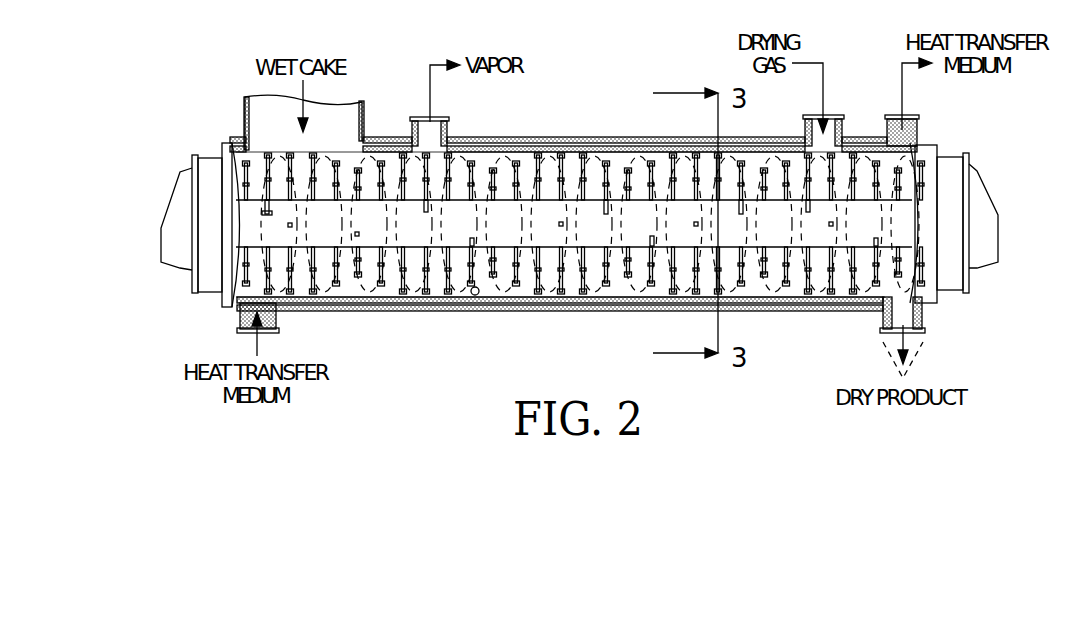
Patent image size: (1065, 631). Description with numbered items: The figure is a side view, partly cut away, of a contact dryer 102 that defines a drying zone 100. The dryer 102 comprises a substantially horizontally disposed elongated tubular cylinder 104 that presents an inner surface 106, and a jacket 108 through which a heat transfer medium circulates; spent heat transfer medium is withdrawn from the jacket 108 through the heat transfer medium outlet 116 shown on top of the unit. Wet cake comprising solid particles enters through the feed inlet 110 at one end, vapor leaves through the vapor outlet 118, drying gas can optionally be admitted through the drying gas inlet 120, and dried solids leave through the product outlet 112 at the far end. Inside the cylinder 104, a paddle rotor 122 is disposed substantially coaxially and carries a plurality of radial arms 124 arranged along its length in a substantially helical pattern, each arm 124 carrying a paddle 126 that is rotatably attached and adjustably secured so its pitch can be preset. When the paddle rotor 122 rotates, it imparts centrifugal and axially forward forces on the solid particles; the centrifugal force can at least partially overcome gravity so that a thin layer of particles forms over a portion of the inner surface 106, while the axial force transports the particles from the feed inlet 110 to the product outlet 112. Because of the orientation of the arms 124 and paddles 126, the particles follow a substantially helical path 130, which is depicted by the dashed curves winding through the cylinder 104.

The drying zone 100 is at (497, 150).
The contact dryer 102 is at (576, 97).
The elongated tubular cylinder 104 is at (427, 290).
The inner surface 106 is at (477, 296).
The jacket 108 is at (528, 308).
The feed inlet 110 is at (244, 116).
The product outlet 112 is at (926, 320).
The heat transfer medium outlet 116 is at (919, 128).
The vapor outlet 118 is at (412, 128).
The drying gas inlet 120 is at (840, 125).
The paddle rotor 122 is at (596, 230).
The radial arms 124 is at (764, 272).
The paddle 126 is at (815, 280).
The helical path 130 is at (375, 280).